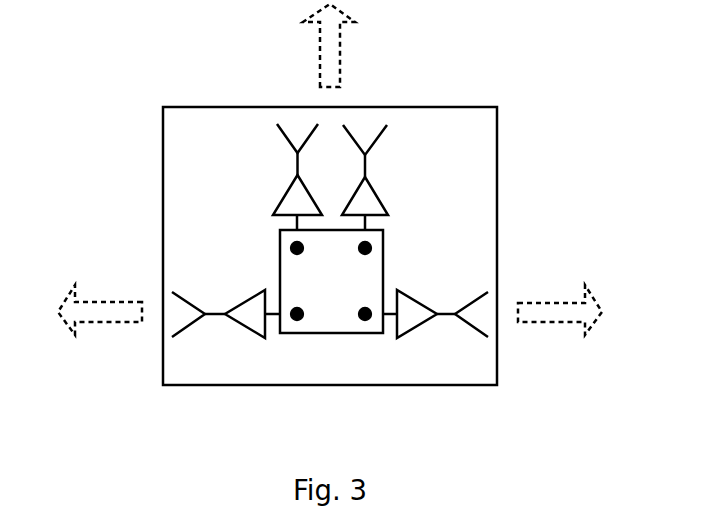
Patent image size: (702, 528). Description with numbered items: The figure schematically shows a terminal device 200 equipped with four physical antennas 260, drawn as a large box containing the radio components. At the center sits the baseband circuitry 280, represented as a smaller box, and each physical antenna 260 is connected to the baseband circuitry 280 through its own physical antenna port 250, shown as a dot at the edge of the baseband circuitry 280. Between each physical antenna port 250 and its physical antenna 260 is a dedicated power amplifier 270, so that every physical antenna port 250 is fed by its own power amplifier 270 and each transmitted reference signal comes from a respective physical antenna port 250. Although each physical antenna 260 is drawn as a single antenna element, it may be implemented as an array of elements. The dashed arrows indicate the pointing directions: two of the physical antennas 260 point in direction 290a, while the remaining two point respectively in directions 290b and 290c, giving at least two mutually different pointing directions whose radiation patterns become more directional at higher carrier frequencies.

The terminal device 200 is at (352, 375).
The physical antenna port 250 is at (372, 250).
The physical antenna 260 is at (385, 127).
The power amplifier 270 is at (385, 205).
The baseband circuitry 280 is at (280, 250).
The pointing direction 290a is at (330, 45).
The pointing direction 290b is at (105, 313).
The pointing direction 290c is at (553, 313).